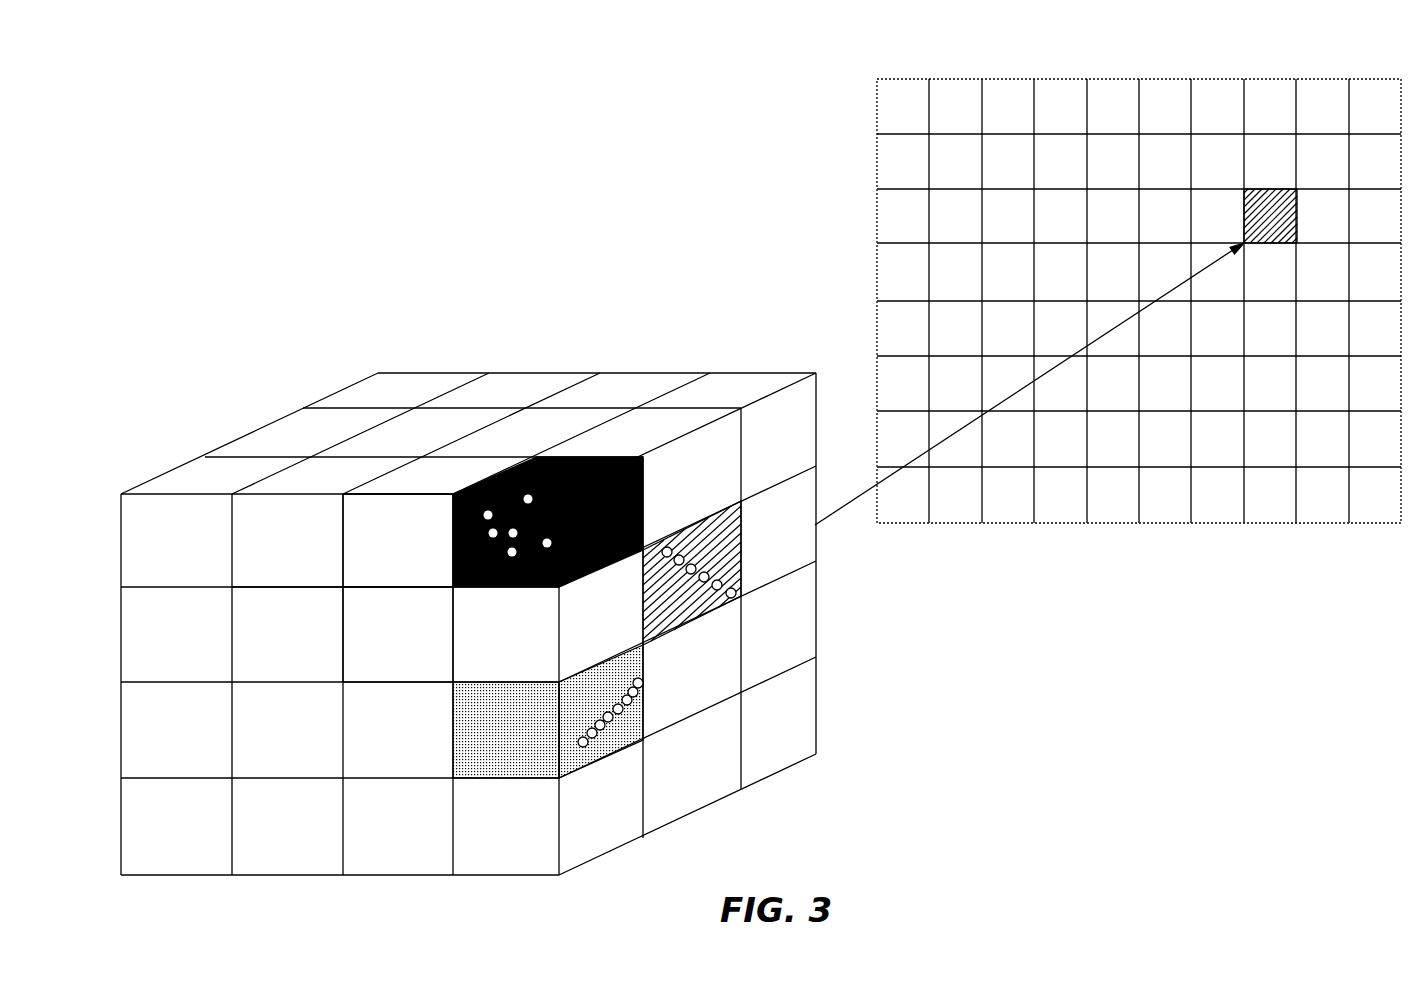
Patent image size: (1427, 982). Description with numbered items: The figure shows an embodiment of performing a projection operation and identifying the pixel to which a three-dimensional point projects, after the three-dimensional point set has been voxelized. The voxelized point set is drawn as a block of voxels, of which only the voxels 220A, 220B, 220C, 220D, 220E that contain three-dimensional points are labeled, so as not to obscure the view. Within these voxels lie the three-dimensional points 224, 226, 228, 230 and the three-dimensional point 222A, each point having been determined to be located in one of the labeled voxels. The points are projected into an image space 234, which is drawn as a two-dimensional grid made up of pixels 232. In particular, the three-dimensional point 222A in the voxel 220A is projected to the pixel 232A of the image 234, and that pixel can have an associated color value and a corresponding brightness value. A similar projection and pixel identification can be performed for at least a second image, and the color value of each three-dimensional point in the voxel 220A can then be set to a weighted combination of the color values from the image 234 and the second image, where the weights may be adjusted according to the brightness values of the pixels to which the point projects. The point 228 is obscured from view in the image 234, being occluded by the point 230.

The voxel 220A is at (705, 523).
The voxel 220B is at (603, 542).
The voxel 220C is at (625, 680).
The voxel 220D is at (333, 663).
The voxel 220E is at (355, 565).
The 3D point 222A is at (718, 582).
The 3D point 224 is at (500, 486).
The 3D point 226 is at (590, 680).
The 3D point 228 is at (277, 605).
The 3D point 230 is at (422, 552).
The pixel 232 is at (900, 80).
The pixel 232A is at (1257, 190).
The image space 234 is at (810, 32).